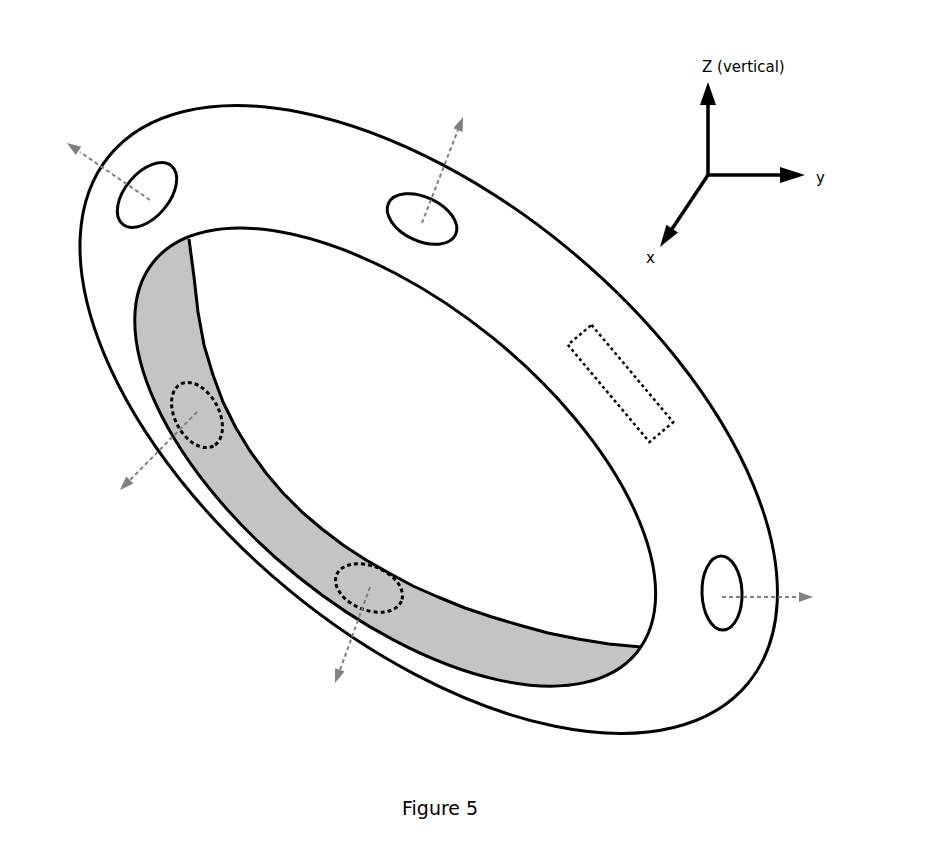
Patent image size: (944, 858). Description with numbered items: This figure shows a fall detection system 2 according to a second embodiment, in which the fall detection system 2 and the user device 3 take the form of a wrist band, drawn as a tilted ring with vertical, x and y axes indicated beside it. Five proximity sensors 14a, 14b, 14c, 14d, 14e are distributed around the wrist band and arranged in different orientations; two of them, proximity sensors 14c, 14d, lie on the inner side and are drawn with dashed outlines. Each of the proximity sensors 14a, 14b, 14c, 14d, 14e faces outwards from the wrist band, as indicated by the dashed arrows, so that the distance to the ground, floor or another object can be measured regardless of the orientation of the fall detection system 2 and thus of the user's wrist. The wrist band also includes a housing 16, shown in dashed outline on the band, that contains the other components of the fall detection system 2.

The fall detection system 2 is at (242, 107).
The user device 3 is at (302, 101).
The proximity sensor 14a is at (445, 210).
The proximity sensor 14b is at (735, 623).
The proximity sensor 14c is at (382, 612).
The proximity sensor 14d is at (198, 445).
The proximity sensor 14e is at (155, 167).
The housing 16 is at (636, 377).